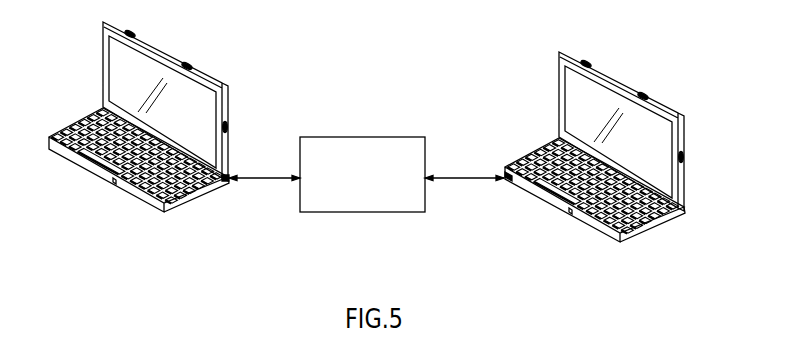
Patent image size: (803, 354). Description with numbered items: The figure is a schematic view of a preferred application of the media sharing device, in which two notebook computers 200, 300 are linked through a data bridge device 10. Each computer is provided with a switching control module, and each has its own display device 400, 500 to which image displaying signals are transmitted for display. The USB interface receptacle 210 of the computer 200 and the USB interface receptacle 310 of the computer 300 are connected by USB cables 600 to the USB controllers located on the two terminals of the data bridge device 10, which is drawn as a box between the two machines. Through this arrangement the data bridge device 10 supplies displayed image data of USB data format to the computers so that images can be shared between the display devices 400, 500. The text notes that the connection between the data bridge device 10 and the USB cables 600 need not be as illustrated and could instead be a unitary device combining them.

The data bridge device 10 is at (375, 136).
The computer 200 is at (86, 168).
The USB interface receptacle 210 is at (222, 183).
The computer 300 is at (595, 206).
The USB interface receptacle 310 is at (513, 204).
The display device 400 is at (132, 68).
The display device 500 is at (594, 131).
The USB cable 600 is at (270, 175).